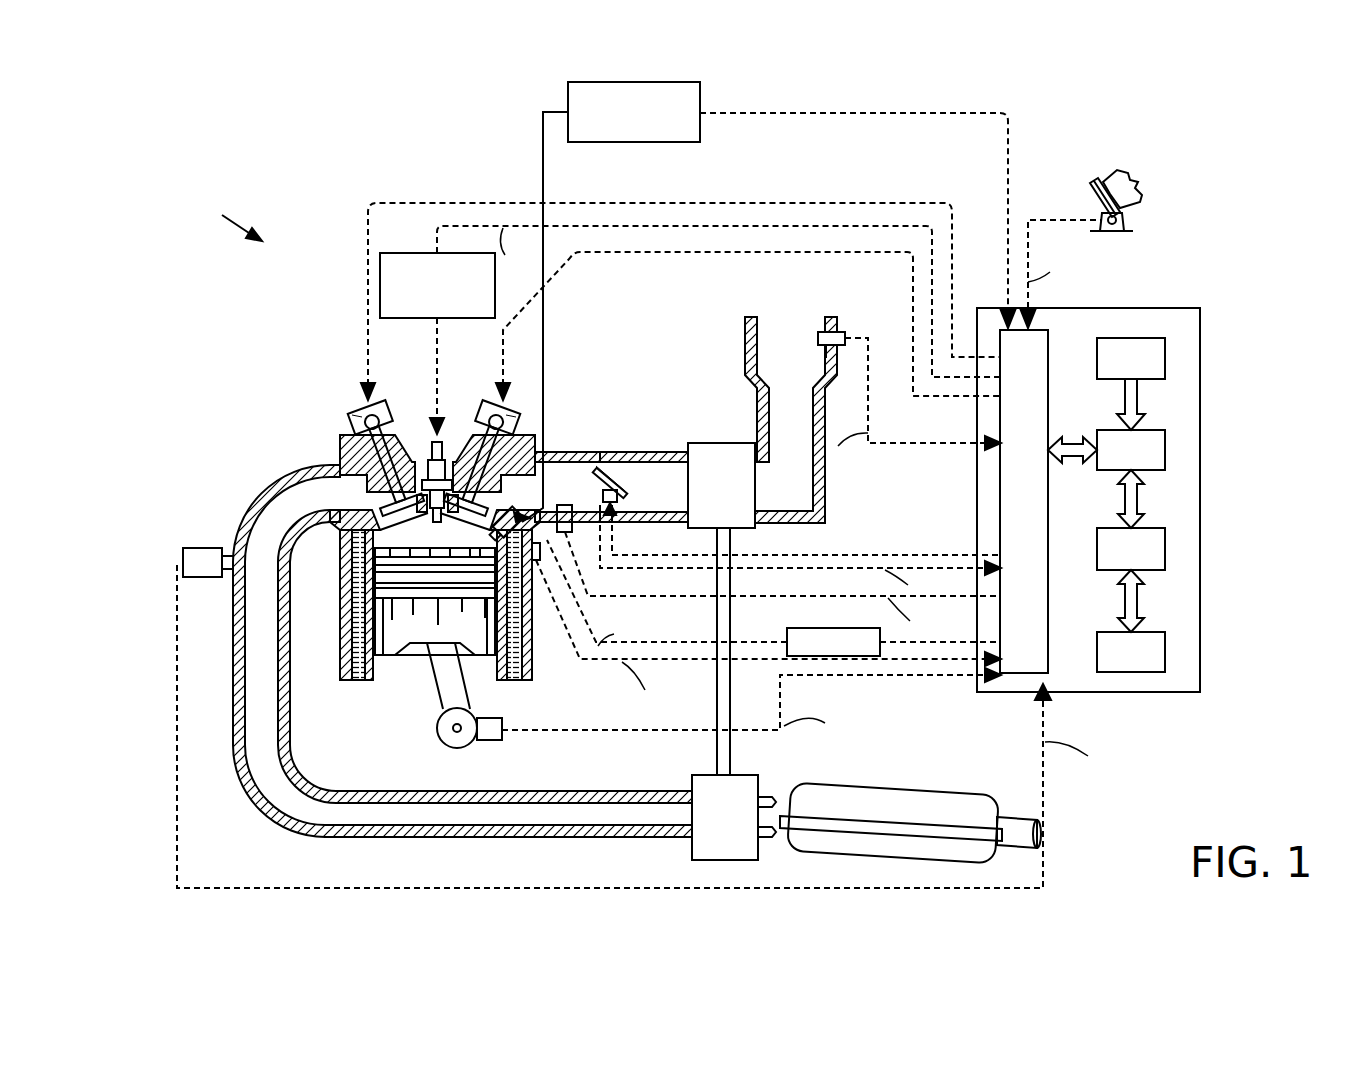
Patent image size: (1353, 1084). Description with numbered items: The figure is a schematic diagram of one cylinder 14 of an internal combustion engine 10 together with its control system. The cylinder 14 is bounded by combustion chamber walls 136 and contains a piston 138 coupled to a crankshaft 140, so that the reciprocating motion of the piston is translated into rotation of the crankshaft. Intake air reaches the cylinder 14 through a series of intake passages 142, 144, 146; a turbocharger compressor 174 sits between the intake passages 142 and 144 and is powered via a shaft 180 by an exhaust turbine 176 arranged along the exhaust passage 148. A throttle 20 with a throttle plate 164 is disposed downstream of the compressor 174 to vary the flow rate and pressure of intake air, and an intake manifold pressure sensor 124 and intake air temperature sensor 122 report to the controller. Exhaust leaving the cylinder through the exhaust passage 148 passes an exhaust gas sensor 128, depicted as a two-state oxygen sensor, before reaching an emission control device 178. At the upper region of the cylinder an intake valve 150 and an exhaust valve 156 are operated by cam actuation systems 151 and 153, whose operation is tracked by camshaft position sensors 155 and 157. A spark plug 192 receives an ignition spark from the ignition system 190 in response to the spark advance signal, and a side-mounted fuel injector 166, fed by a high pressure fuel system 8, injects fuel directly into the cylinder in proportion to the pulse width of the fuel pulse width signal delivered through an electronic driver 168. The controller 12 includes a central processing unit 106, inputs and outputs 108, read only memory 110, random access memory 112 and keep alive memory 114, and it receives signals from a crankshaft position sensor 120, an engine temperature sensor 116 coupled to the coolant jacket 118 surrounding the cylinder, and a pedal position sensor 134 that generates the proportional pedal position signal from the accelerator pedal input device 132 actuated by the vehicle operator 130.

The high pressure fuel system 8 is at (769, 302).
The internal combustion engine 10 is at (223, 217).
The controller 12 is at (1190, 308).
The cylinder 14 is at (427, 530).
The throttle 20 is at (612, 470).
The central processing unit 106 is at (1167, 450).
The inputs and outputs 108 is at (1050, 337).
The read only memory 110 is at (1167, 357).
The random access memory 112 is at (1167, 545).
The keep alive memory 114 is at (1167, 648).
The engine temperature sensor 116 is at (541, 563).
The cooling sleeve 118 is at (520, 680).
The crankshaft position sensor 120 is at (490, 742).
The intake air temperature sensor 122 is at (840, 333).
The intake manifold pressure sensor 124 is at (568, 533).
The exhaust gas sensor 128 is at (183, 556).
The vehicle operator 130 is at (1142, 188).
The input device 132 is at (1092, 195).
The pedal position sensor 134 is at (1124, 225).
The combustion chamber walls 136 is at (373, 678).
The piston 138 is at (422, 660).
The crankshaft 140 is at (445, 746).
The intake passage 142 is at (791, 420).
The intake passage 144 is at (644, 487).
The intake passage 146 is at (567, 487).
The exhaust passage 148 is at (462, 651).
The intake valve 150 is at (473, 485).
The cam actuation system 151 is at (490, 404).
The cam actuation system 153 is at (388, 402).
The camshaft position sensor 155 is at (517, 410).
The exhaust valve 156 is at (398, 512).
The camshaft position sensor 157 is at (352, 412).
The throttle plate 164 is at (592, 472).
The fuel injector 166 is at (527, 509).
The electronic driver 168 is at (787, 633).
The compressor 174 is at (705, 443).
The exhaust turbine 176 is at (692, 846).
The emission control device 178 is at (958, 793).
The shaft 180 is at (735, 735).
The ignition system 190 is at (400, 253).
The spark plug 192 is at (425, 462).